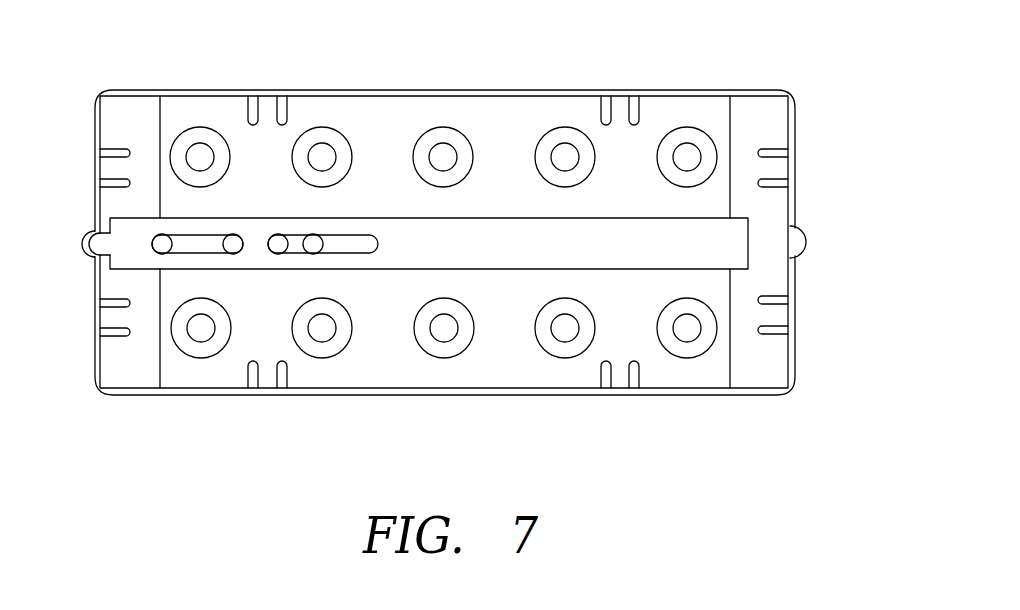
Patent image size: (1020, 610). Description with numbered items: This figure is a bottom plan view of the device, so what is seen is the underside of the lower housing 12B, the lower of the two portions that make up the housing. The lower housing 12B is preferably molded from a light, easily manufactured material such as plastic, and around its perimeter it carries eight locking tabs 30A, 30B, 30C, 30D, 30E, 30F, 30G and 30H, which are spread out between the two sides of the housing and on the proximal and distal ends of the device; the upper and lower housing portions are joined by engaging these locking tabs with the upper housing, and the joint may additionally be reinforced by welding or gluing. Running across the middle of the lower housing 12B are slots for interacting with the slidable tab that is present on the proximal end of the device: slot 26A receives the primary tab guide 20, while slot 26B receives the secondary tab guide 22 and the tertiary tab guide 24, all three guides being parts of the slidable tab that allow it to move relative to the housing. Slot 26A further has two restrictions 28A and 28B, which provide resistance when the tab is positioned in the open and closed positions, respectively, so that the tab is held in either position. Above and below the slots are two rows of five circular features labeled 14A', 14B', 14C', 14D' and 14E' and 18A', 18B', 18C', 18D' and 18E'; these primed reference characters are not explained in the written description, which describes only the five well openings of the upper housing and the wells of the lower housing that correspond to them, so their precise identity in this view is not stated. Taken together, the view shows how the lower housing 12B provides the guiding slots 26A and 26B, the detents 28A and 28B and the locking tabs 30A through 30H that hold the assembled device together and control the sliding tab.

The lower housing 12B is at (648, 203).
The upper aperture 14A' is at (200, 112).
The upper aperture 14B' is at (322, 112).
The upper aperture 14C' is at (443, 112).
The upper aperture 14D' is at (565, 112).
The upper aperture 14E' is at (687, 112).
The lower aperture 18A' is at (201, 376).
The lower aperture 18B' is at (322, 376).
The lower aperture 18C' is at (444, 376).
The lower aperture 18D' is at (566, 376).
The lower aperture 18E' is at (687, 376).
The primary tab guide 20 is at (152, 243).
The secondary tab guide 22 is at (271, 253).
The tertiary tab guide 24 is at (314, 235).
The slot 26A is at (204, 240).
The slot 26B is at (365, 244).
The restriction 28A is at (159, 254).
The restriction 28B is at (228, 254).
The locking tab 30A is at (782, 316).
The locking tab 30B is at (782, 168).
The locking tab 30C is at (620, 105).
The locking tab 30D is at (267, 105).
The locking tab 30E is at (107, 170).
The locking tab 30F is at (108, 317).
The locking tab 30G is at (265, 392).
The locking tab 30H is at (617, 392).